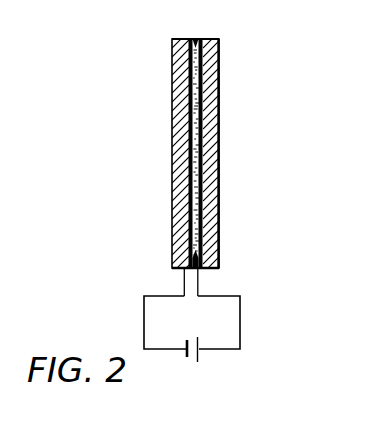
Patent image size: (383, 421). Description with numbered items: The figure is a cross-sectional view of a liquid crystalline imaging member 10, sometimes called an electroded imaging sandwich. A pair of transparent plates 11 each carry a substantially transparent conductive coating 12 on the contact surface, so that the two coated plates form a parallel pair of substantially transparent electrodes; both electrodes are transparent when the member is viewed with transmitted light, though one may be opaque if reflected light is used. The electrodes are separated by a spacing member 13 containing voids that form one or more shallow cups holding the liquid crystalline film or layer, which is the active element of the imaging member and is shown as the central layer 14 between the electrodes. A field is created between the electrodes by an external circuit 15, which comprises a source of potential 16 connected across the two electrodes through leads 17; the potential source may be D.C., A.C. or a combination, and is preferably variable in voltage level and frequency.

The liquid crystalline imaging member 10 is at (222, 161).
The transparent plates 11 is at (174, 54).
The transparent conductive coating 12 is at (174, 38).
The spacing member 13 is at (186, 257).
The electret layer 14 is at (178, 153).
The external circuit 15 is at (272, 334).
The source of potential 16 is at (192, 359).
The leads 17 is at (184, 279).